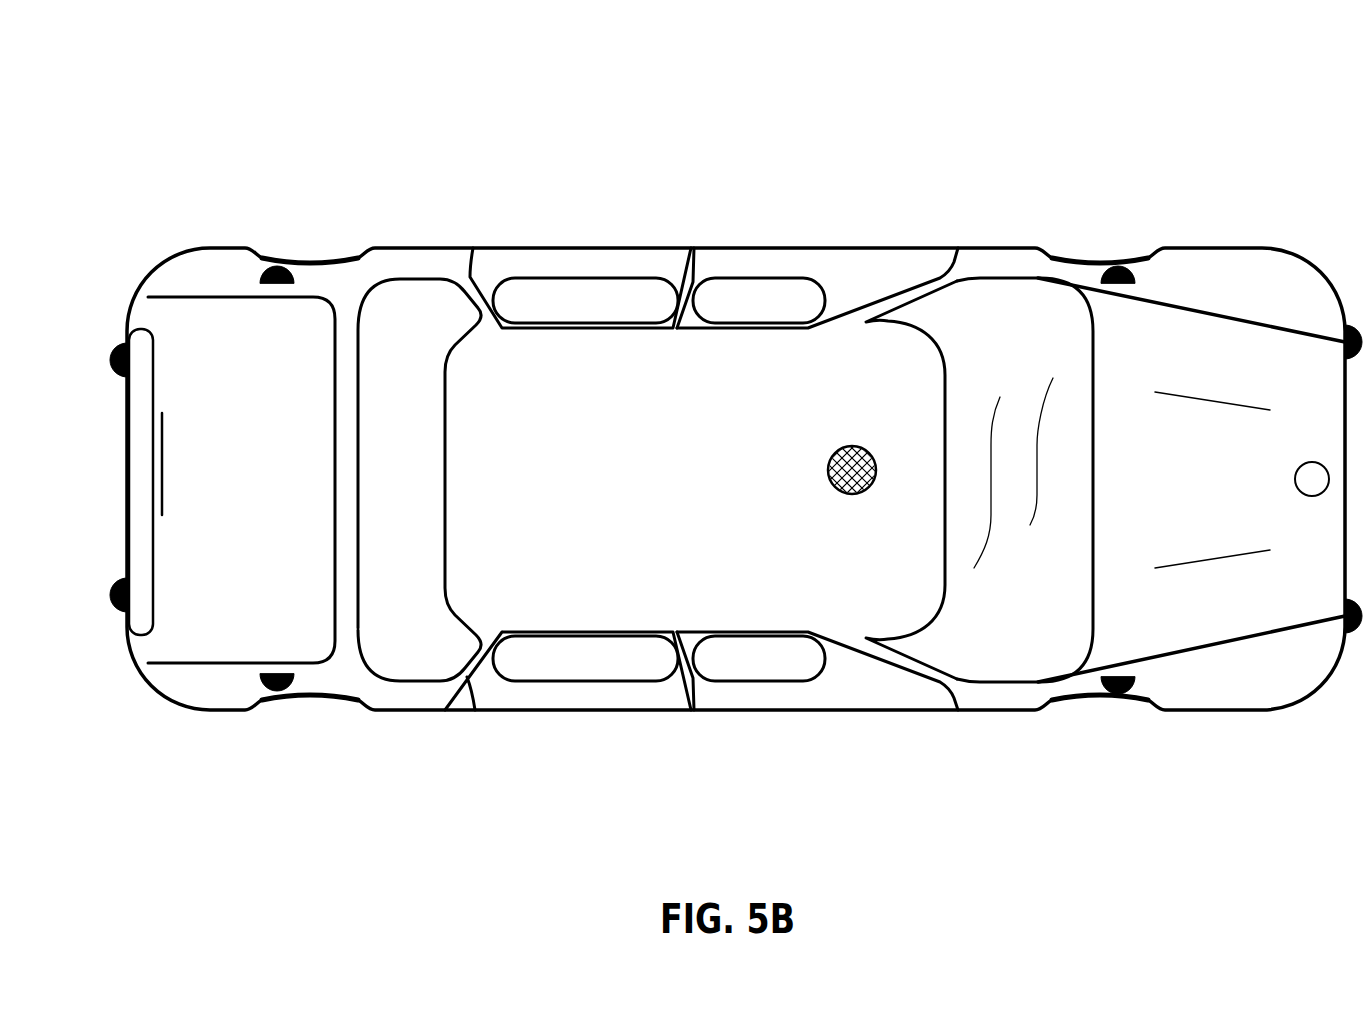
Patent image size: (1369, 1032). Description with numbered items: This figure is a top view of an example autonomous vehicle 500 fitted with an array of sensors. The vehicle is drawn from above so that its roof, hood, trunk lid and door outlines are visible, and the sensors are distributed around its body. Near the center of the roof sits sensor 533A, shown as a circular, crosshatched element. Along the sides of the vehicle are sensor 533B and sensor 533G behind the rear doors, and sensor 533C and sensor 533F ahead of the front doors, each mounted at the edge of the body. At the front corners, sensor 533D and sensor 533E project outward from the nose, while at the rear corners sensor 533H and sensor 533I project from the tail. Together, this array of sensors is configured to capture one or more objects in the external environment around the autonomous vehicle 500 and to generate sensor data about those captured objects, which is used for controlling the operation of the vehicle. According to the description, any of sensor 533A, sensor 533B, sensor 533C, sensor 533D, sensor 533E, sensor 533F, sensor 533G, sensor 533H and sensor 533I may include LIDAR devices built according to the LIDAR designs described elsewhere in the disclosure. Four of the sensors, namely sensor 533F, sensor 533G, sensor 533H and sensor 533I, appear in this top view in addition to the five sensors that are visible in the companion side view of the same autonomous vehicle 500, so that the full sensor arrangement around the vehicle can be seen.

The autonomous vehicle 500 is at (1220, 84).
The sensor 533A is at (855, 446).
The sensor 533B is at (294, 674).
The sensor 533C is at (1135, 678).
The sensor 533D is at (1342, 612).
The sensor 533E is at (1342, 345).
The sensor 533F is at (1135, 283).
The sensor 533G is at (294, 283).
The sensor 533H is at (128, 362).
The sensor 533I is at (128, 595).